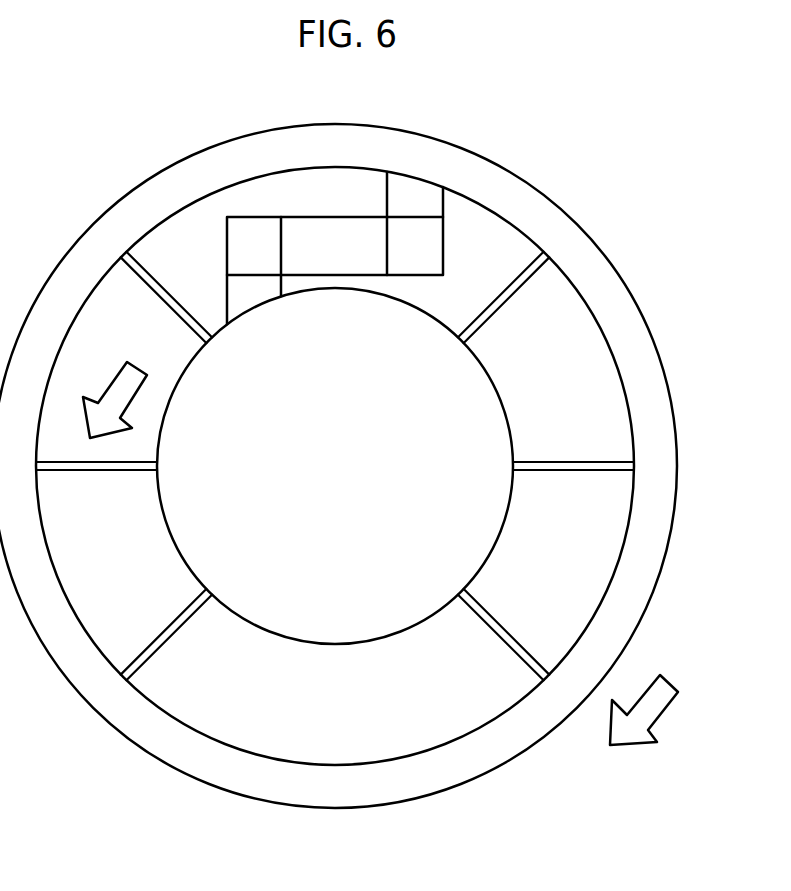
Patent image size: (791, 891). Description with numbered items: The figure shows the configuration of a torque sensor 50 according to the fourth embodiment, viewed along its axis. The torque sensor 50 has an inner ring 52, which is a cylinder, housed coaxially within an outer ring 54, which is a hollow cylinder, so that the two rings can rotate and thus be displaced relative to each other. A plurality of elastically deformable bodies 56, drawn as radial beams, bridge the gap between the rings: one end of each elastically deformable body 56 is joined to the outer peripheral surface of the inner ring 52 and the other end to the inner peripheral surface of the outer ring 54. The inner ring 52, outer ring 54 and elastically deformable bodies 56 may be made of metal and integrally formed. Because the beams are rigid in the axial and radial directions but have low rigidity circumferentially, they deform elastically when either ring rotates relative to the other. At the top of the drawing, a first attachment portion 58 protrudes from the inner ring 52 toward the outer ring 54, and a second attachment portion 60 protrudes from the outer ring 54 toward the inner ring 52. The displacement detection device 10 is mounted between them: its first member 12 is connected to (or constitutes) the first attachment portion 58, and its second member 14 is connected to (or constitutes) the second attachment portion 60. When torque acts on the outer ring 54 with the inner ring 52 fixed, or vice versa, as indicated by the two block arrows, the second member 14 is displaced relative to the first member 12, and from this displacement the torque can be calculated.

The torque sensor 50 is at (130, 72).
The outer ring 54 is at (517, 195).
The inner ring 52 is at (337, 637).
The elastically deformable bodies 56 is at (170, 301).
The displacement detection device 10 is at (336, 210).
The first member 12 is at (237, 247).
The second member 14 is at (432, 247).
The second attachment portion 60 is at (388, 200).
The first attachment portion 58 is at (237, 290).